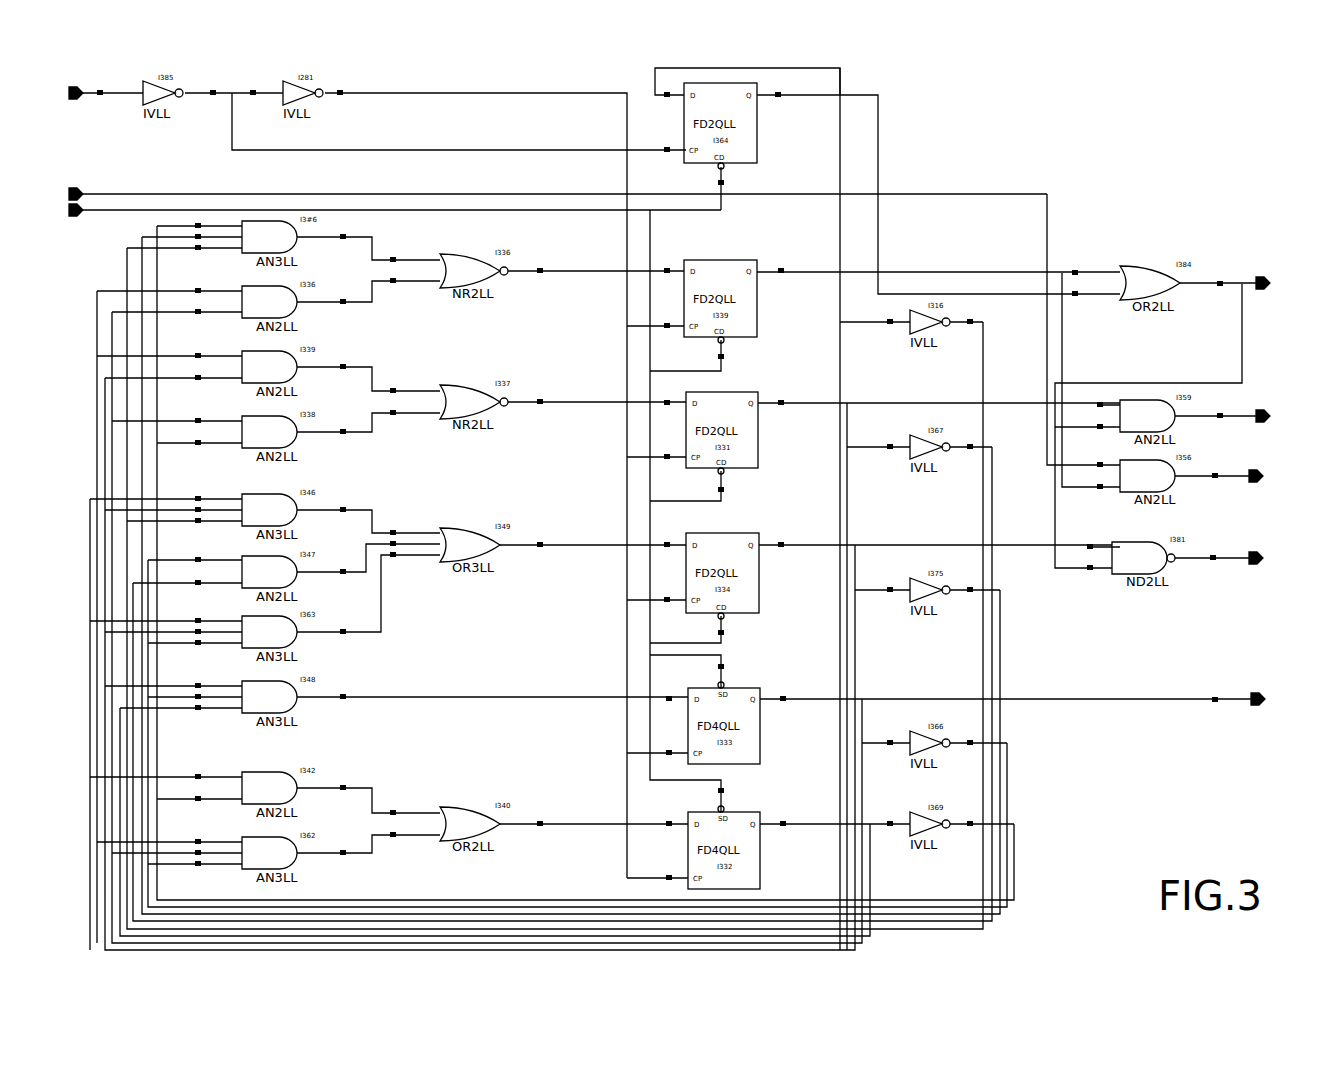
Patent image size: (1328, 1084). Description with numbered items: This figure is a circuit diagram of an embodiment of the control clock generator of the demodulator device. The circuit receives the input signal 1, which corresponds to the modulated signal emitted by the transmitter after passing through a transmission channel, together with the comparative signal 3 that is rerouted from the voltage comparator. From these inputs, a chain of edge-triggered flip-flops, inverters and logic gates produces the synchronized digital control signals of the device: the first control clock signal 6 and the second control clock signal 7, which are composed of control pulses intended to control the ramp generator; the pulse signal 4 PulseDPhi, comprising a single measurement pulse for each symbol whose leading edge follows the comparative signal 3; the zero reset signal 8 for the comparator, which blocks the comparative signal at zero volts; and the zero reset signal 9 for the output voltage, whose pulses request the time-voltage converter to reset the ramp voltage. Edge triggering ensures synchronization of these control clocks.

The input signal 1 is at (75, 86).
The comparative output signal 3 is at (75, 186).
The pulse signal PulseDPhi 4 is at (1259, 469).
The first control clock signal 6 is at (1266, 276).
The second control clock signal 7 is at (1266, 409).
The zero reset signal for the comparator 8 is at (1259, 551).
The zero reset signal for the output voltage 9 is at (1261, 692).